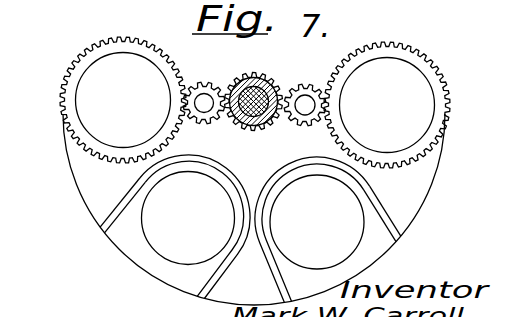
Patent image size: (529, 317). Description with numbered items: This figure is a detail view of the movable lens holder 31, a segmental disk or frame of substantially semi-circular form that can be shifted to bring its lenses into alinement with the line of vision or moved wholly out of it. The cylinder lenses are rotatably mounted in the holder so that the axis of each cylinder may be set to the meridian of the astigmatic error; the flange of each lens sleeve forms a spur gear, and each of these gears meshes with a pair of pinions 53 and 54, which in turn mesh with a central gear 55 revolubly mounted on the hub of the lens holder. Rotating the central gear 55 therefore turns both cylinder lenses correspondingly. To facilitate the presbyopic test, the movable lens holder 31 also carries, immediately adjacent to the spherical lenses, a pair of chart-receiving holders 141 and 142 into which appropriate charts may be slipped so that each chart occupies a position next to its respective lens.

The movable lens holder 31 is at (125, 192).
The pinion 53 is at (208, 84).
The pinion 54 is at (302, 85).
The central gear 55 is at (258, 133).
The chart-receiving holder 141 is at (110, 223).
The chart-receiving holder 142 is at (386, 248).